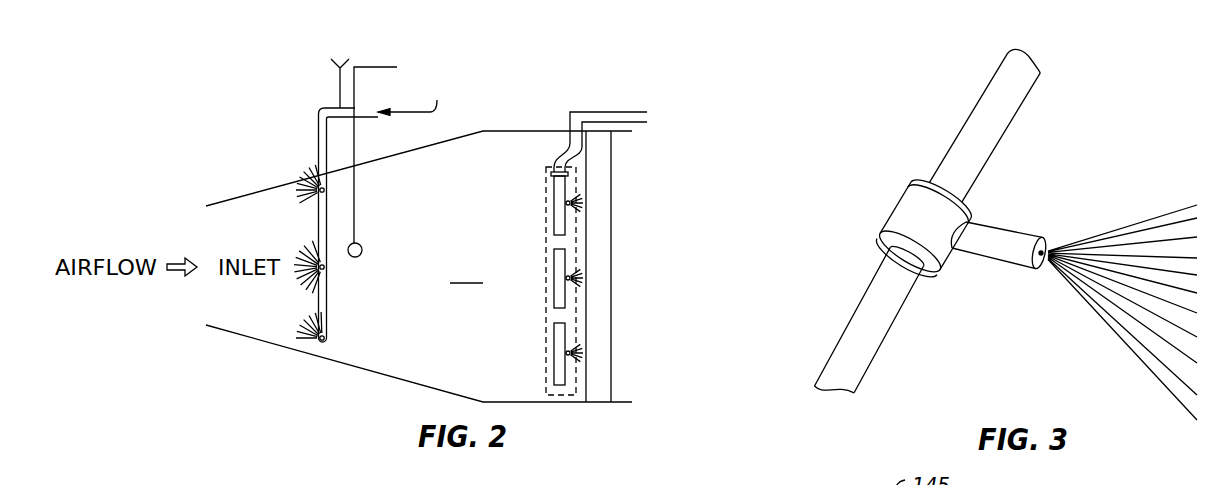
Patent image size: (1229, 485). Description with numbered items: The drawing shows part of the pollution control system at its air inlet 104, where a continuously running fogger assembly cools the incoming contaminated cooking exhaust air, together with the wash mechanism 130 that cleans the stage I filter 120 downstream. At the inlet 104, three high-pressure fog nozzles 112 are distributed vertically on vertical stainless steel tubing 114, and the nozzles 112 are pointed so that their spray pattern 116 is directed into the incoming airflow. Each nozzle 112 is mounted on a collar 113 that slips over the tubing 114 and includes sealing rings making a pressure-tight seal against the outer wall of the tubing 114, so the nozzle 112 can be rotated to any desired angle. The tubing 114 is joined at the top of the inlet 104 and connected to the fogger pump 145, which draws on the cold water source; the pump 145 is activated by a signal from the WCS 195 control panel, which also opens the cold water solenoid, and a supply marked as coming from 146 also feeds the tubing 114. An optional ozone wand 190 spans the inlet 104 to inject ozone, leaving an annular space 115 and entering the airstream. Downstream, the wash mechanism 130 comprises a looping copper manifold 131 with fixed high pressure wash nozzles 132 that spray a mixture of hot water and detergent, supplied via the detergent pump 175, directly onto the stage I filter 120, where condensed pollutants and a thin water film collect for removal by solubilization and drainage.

In FIG. 2, the inlet 104 is at (248, 336).
In FIG. 2, the high-pressure fog nozzle 112 is at (333, 190).
In FIG. 3, the high-pressure fog nozzle 112 is at (1007, 268).
In FIG. 3, the collar 113 is at (907, 208).
In FIG. 2, the vertical stainless steel tubing 114 is at (317, 218).
In FIG. 3, the vertical stainless steel tubing 114 is at (858, 328).
In FIG. 2, the annular space 115 is at (466, 271).
In FIG. 2, the spray pattern 116 is at (281, 327).
In FIG. 3, the spray pattern 116 is at (1121, 327).
In FIG. 2, the stage I filter 120 is at (598, 352).
In FIG. 2, the wash mechanism 130 is at (546, 233).
In FIG. 2, the looping copper manifold 131 is at (554, 213).
In FIG. 2, the fixed high pressure wash nozzle 132 is at (570, 203).
In FIG. 2, the fogger pump 145 is at (541, 97).
In FIG. 2, the supply source 146 is at (339, 73).
In FIG. 2, the detergent pump 175 is at (726, 139).
In FIG. 2, the ozone wand 190 is at (362, 246).
In FIG. 2, the WCS control panel 195 is at (423, 149).